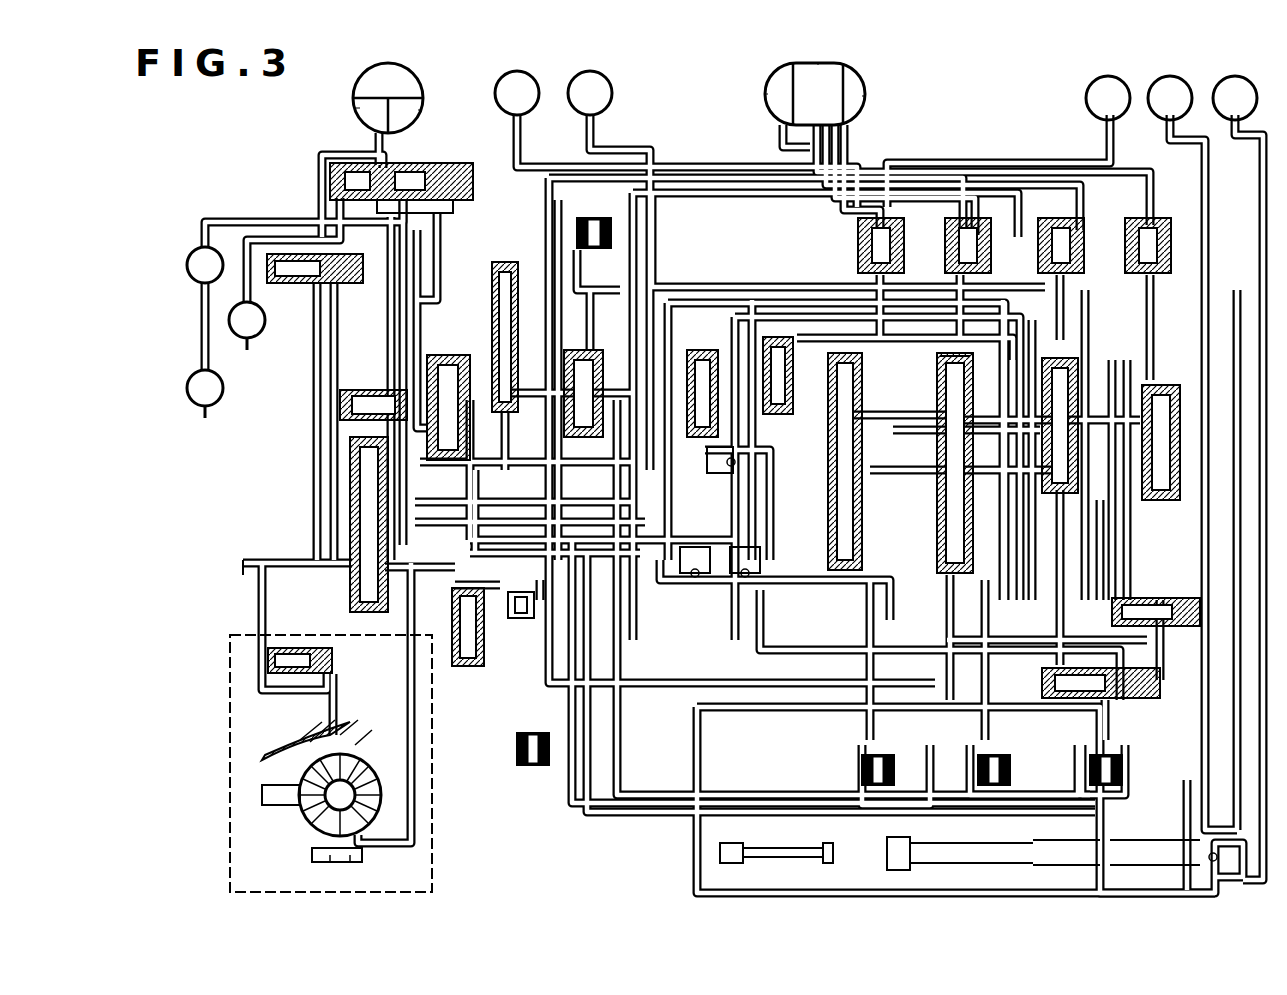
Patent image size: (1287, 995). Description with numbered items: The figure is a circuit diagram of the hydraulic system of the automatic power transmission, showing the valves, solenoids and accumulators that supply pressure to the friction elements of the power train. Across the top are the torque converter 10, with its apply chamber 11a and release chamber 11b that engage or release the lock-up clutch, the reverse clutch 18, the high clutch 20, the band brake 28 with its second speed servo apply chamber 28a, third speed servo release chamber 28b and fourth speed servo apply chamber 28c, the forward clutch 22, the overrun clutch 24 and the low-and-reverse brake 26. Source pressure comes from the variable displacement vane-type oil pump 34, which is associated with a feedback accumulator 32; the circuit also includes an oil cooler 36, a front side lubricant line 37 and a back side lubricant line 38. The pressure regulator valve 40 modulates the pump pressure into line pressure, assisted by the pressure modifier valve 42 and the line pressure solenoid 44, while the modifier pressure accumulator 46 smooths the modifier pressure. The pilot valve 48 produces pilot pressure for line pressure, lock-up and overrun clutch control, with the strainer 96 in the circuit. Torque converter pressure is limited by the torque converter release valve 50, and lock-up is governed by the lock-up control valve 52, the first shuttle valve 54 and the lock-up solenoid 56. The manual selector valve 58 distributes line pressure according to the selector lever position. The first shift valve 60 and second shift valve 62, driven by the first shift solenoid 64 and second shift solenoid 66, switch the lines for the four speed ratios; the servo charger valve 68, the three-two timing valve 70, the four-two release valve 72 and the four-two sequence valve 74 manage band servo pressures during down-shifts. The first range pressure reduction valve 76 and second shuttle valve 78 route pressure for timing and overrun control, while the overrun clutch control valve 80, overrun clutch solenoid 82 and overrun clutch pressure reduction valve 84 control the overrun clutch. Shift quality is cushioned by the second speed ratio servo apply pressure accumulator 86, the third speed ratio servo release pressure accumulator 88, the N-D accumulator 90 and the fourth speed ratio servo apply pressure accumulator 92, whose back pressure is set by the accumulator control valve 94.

The torque converter 10 is at (412, 70).
The apply chamber 11a is at (420, 112).
The release chamber 11b is at (355, 108).
The reverse clutch 18 is at (524, 72).
The high clutch 20 is at (600, 72).
The forward clutch 22 is at (1116, 77).
The overrun clutch 24 is at (1180, 77).
The low-and-reverse brake 26 is at (1243, 77).
The band brake 28 is at (868, 70).
The second speed servo apply chamber 28a is at (766, 95).
The third speed servo release chamber 28b is at (818, 63).
The fourth speed servo apply chamber 28c is at (865, 97).
The feedback accumulator 32 is at (342, 676).
The variable displacement vane-type oil pump 34 is at (308, 825).
The oil cooler 36 is at (187, 265).
The front side lubricant line 37 is at (264, 330).
The back side lubricant line 38 is at (192, 374).
The pressure regulator valve 40 is at (345, 588).
The pressure modifier valve 42 is at (450, 352).
The line pressure solenoid 44 is at (515, 768).
The modifier pressure accumulator 46 is at (372, 385).
The pilot valve 48 is at (492, 650).
The torque converter release valve 50 is at (355, 288).
The lock-up control valve 52 is at (472, 205).
The first shuttle valve 54 is at (694, 442).
The lock-up solenoid 56 is at (614, 232).
The manual selector valve 58 is at (955, 840).
The first shift valve 60 is at (932, 365).
The second shift valve 62 is at (870, 352).
The first shift solenoid 64 is at (1014, 767).
The second shift solenoid 66 is at (895, 760).
The servo charger valve 68 is at (488, 280).
The 3-2 timing valve 70 is at (780, 418).
The 4-2 release valve 72 is at (940, 578).
The 4-2 sequence valve 74 is at (866, 540).
The first range pressure reduction valve 76 is at (1195, 600).
The second shuttle valve 78 is at (1100, 702).
The overrun clutch control valve 80 is at (1085, 460).
The overrun clutch solenoid 82 is at (1107, 790).
The overrun clutch pressure reduction valve 84 is at (1162, 383).
The second speed ratio servo apply pressure accumulator 86 is at (980, 235).
The third speed ratio servo release pressure accumulator 88 is at (1068, 230).
The N-D accumulator 90 is at (895, 240).
The fourth speed ratio servo apply pressure accumulator 92 is at (1148, 230).
The accumulator control valve 94 is at (588, 348).
The strainer 96 is at (527, 622).